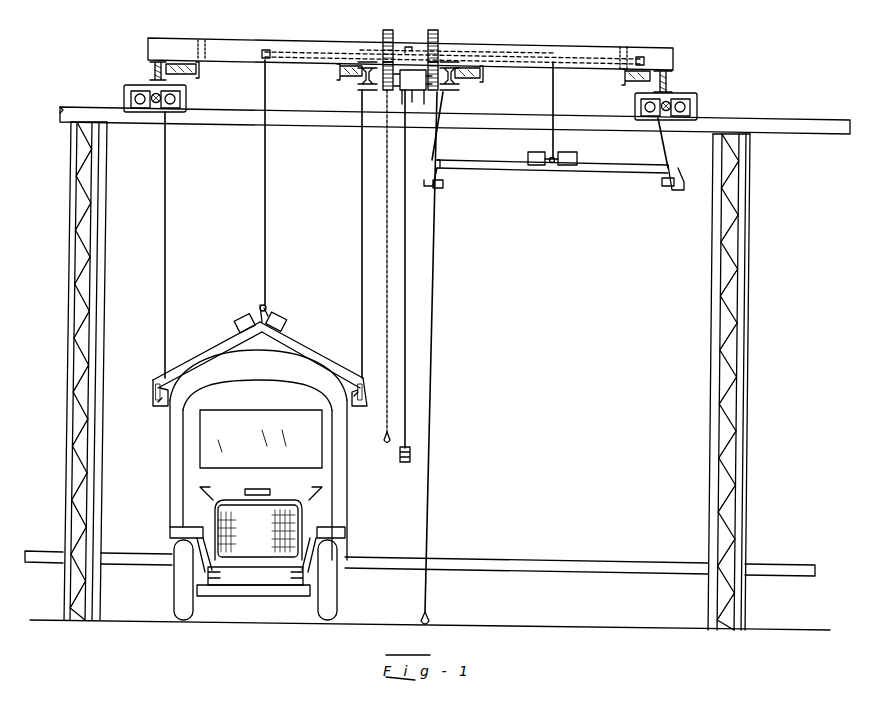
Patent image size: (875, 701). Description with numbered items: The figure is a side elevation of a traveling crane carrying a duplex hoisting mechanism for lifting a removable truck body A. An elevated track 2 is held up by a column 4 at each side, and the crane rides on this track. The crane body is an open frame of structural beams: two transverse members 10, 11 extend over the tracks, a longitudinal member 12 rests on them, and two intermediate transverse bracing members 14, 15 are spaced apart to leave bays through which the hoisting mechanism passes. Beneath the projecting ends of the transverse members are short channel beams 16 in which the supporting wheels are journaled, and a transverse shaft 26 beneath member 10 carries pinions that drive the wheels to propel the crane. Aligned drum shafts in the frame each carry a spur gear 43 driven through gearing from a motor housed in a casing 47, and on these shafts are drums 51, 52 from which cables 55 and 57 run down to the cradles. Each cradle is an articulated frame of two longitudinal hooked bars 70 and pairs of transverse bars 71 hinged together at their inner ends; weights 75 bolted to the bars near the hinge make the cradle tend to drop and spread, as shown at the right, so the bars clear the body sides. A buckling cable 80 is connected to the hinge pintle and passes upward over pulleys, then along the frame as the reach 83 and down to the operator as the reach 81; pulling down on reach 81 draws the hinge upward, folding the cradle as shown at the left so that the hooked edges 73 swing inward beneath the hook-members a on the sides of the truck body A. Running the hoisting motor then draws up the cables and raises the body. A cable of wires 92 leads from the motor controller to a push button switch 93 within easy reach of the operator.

The track 2 is at (808, 124).
The column 4 is at (64, 376).
The transverse member 10 is at (151, 73).
The transverse member 11 is at (673, 82).
The longitudinal member 12 is at (410, 54).
The intermediate transverse bracing member 14 is at (370, 90).
The intermediate transverse bracing member 15 is at (446, 92).
The short channel beam 16 is at (124, 93).
The transverse shaft 26 is at (154, 104).
The spur gear 43 is at (398, 44).
The casing 47 is at (418, 86).
The drum 51 is at (188, 75).
The drum 52 is at (465, 80).
The cable 55 is at (165, 244).
The cable 57 is at (439, 138).
The longitudinal hooked bar 70 is at (430, 172).
The transverse bar 71 is at (492, 170).
The hooked edge 73 is at (443, 184).
The weight 75 is at (570, 151).
The cable 80 is at (267, 200).
The cable reach 81 is at (385, 292).
The cable reach 83 is at (330, 50).
The cable of wires 92 is at (406, 305).
The push button switch 93 is at (405, 463).
The removable truck body A is at (348, 480).
The hook-member a is at (158, 405).